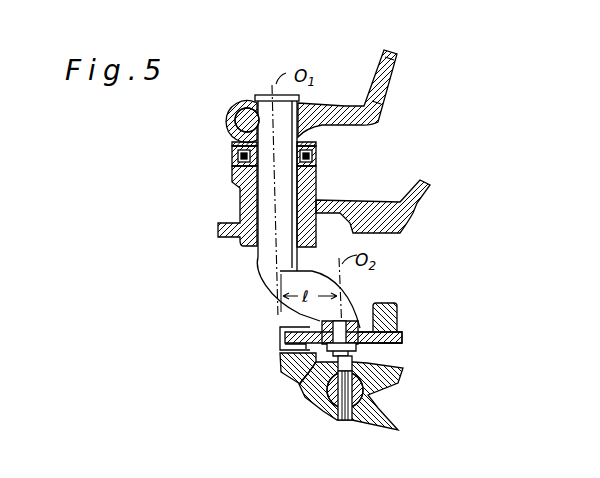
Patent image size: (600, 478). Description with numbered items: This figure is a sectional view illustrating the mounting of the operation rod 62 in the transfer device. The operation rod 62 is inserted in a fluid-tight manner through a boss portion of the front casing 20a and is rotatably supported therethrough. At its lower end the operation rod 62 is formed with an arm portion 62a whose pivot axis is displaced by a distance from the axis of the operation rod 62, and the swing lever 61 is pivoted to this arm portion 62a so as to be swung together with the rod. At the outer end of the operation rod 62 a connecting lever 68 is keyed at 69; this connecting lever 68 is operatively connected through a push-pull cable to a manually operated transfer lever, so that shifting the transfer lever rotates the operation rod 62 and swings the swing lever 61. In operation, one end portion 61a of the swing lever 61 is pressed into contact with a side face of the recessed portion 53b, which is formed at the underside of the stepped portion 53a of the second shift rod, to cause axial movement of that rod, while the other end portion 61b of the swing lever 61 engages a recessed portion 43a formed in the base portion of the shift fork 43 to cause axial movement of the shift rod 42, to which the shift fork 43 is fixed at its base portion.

The front casing 20a is at (360, 210).
The shift rod 42 is at (325, 400).
The shift fork 43 is at (366, 393).
The recessed portion 43a is at (280, 355).
The stepped portion 53a is at (398, 308).
The recessed portion 53b is at (400, 338).
The swing lever 61 is at (330, 348).
The one end portion 61a is at (395, 348).
The other end portion 61b is at (282, 333).
The operation rod 62 is at (258, 205).
The arm portion 62a is at (343, 313).
The connecting lever 68 is at (382, 116).
The key 69 is at (230, 118).